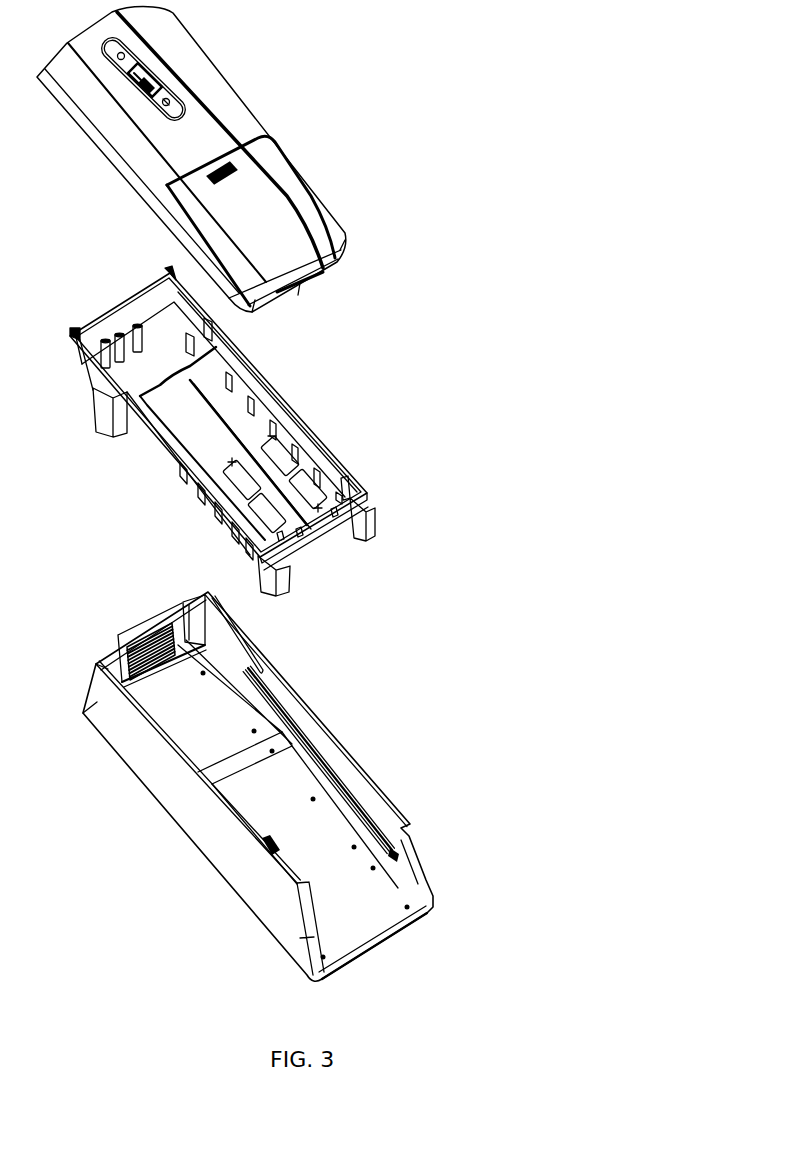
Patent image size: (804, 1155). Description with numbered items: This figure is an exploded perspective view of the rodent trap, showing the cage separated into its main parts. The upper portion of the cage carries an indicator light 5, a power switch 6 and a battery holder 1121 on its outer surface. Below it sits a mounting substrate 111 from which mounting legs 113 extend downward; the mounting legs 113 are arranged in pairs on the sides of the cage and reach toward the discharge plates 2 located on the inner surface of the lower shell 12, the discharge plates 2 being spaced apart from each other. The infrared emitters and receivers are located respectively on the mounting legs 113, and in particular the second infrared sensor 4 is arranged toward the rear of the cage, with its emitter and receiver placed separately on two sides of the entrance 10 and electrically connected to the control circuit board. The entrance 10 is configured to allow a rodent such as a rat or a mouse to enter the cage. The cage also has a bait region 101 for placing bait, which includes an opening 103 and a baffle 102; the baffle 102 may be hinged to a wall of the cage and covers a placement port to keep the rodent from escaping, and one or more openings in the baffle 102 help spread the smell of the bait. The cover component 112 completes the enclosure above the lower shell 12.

The discharge plates 2 is at (250, 722).
The second infrared sensor 4 is at (349, 522).
The indicator light 5 is at (124, 55).
The power switch 6 is at (152, 72).
The entrance 10 is at (342, 926).
The lower shell 12 is at (203, 837).
The bait region 101 is at (197, 665).
The baffle 102 is at (206, 628).
The opening 103 is at (157, 615).
The mounting substrate 111 is at (167, 460).
The cover 112 is at (217, 100).
The mounting legs 113 is at (100, 422).
The battery holder 1121 is at (256, 211).